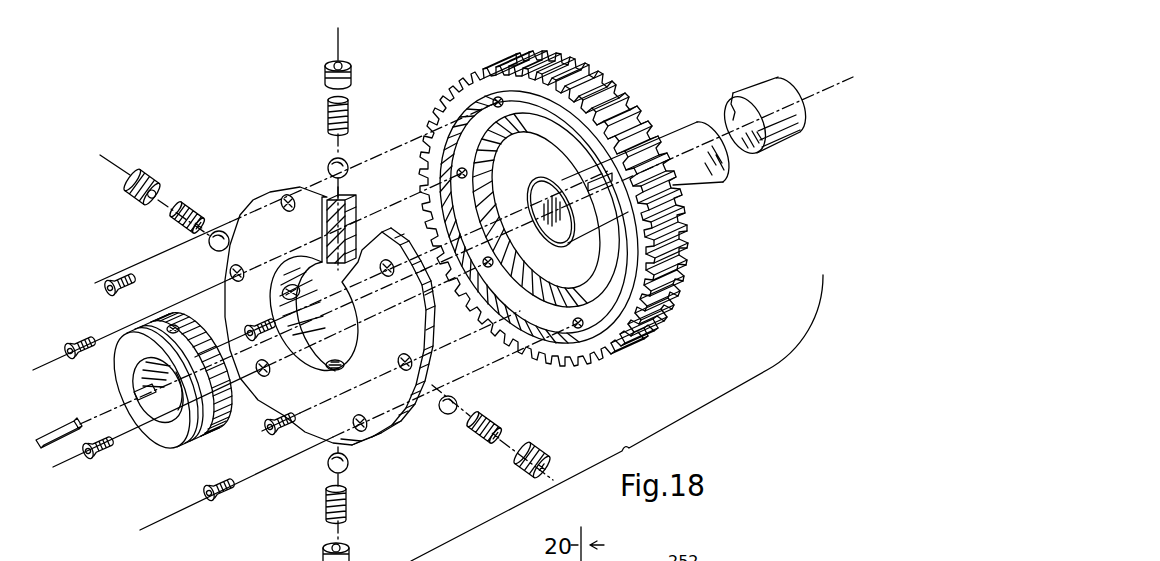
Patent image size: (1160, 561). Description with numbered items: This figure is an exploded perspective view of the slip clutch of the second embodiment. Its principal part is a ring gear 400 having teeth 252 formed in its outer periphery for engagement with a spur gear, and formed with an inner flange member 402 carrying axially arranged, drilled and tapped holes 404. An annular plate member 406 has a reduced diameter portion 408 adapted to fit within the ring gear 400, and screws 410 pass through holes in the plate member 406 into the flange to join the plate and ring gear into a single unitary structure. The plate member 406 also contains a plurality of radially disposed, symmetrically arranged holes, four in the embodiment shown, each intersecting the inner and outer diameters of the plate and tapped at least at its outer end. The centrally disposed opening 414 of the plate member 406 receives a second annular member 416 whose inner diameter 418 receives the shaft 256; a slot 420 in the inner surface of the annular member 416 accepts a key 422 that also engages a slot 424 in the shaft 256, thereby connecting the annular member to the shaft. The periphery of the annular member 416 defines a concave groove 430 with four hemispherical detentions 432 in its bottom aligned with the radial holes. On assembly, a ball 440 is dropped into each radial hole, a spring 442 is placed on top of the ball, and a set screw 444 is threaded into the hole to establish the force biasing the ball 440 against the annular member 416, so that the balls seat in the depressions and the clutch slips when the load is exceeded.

The ring gear 400 is at (541, 50).
The teeth 252 is at (612, 86).
The shaft 256 is at (752, 82).
The inner flange member 402 is at (498, 170).
The drilled and tapped holes 404 is at (498, 258).
The slot 424 is at (601, 208).
The annular plate member 406 is at (258, 200).
The reduced diameter portion 408 is at (288, 198).
The centrally disposed opening 414 is at (314, 371).
The screws 410 is at (212, 500).
The second annular member 416 is at (152, 388).
The inner diameter 418 is at (164, 414).
The slot 420 is at (136, 396).
The key 422 is at (73, 421).
The concave groove 430 is at (213, 316).
The hemispherical detentions 432 is at (172, 325).
The ball 440 is at (458, 403).
The spring 442 is at (499, 424).
The set screw 444 is at (550, 452).